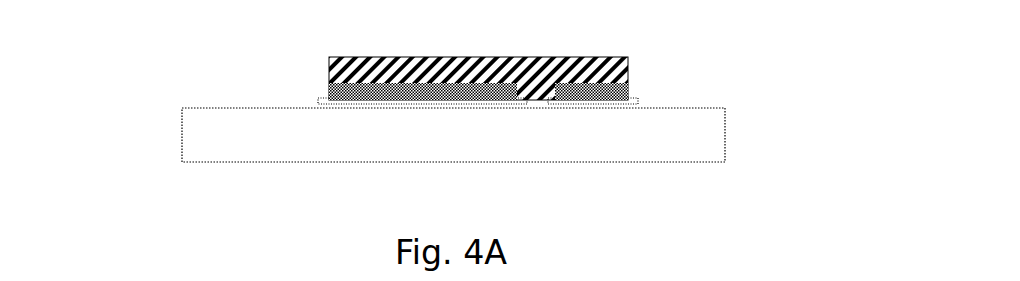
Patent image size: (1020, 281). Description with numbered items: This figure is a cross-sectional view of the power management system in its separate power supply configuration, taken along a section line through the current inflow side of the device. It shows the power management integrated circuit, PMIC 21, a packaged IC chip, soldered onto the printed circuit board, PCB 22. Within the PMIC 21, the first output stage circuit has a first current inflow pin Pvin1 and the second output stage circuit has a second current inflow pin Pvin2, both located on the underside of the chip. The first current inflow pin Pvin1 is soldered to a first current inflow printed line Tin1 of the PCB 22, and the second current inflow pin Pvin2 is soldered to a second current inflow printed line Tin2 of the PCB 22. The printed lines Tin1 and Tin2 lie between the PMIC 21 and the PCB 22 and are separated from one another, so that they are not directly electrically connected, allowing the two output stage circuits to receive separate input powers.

The power management integrated circuit (PMIC) 21 is at (352, 57).
The printed circuit board (PCB) 22 is at (305, 147).
The first current inflow pin Pvin1 is at (348, 87).
The second current inflow pin Pvin2 is at (578, 82).
The first current inflow printed line Tin1 is at (327, 100).
The second current inflow printed line Tin2 is at (632, 98).